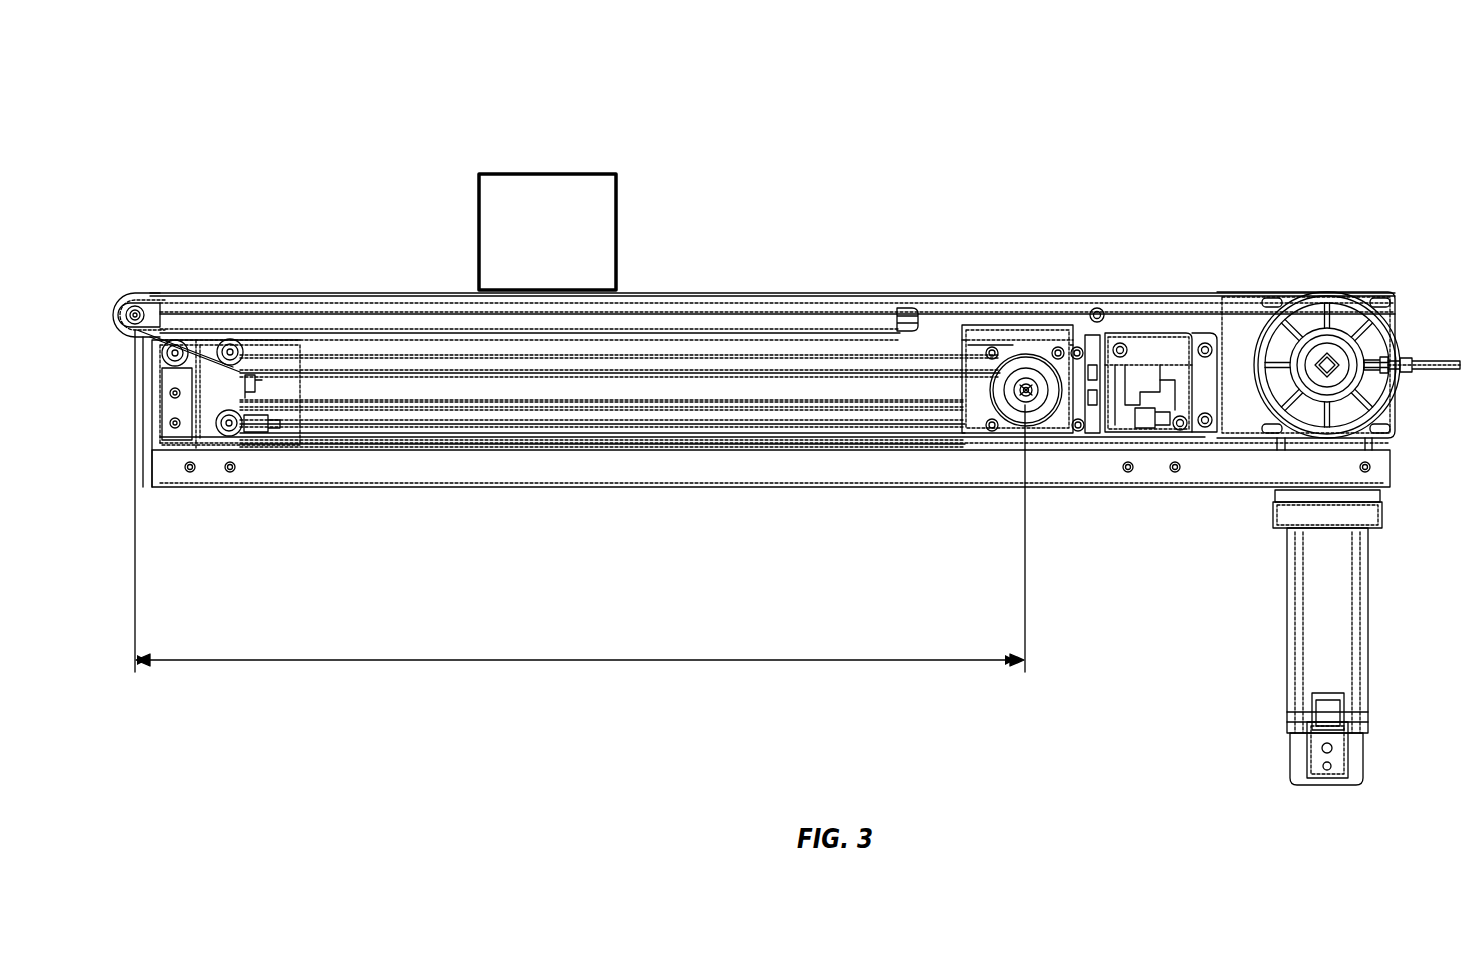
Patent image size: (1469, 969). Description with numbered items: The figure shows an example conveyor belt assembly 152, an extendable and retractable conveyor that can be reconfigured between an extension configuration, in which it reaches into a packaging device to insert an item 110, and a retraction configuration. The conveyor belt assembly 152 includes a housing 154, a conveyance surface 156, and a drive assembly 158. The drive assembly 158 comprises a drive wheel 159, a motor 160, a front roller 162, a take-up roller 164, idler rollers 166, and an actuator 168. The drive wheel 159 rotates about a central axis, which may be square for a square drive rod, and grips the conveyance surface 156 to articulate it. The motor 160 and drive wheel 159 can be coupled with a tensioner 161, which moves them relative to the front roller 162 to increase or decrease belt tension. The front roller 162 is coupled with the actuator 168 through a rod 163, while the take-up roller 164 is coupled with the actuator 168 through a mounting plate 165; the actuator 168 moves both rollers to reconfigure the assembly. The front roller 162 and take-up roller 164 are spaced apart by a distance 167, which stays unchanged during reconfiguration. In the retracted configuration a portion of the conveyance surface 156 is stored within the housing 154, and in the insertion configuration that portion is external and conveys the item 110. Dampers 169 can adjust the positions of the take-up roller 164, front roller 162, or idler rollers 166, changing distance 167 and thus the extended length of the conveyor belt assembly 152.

The item 110 is at (617, 232).
The conveyor belt assembly 152 is at (1030, 131).
The housing 154 is at (490, 465).
The conveyance surface 156 is at (1155, 292).
The drive assembly 158 is at (1227, 338).
The drive wheel 159 is at (1348, 297).
The motor 160 is at (1286, 664).
The tensioner 161 is at (1434, 373).
The front roller 162 is at (133, 312).
The rod 163 is at (750, 315).
The take-up roller 164 is at (1024, 404).
The mounting plate 165 is at (1013, 350).
The idler rollers 166 is at (174, 342).
The distance 167 is at (595, 662).
The actuator 168 is at (915, 385).
The dampers 169 is at (262, 430).